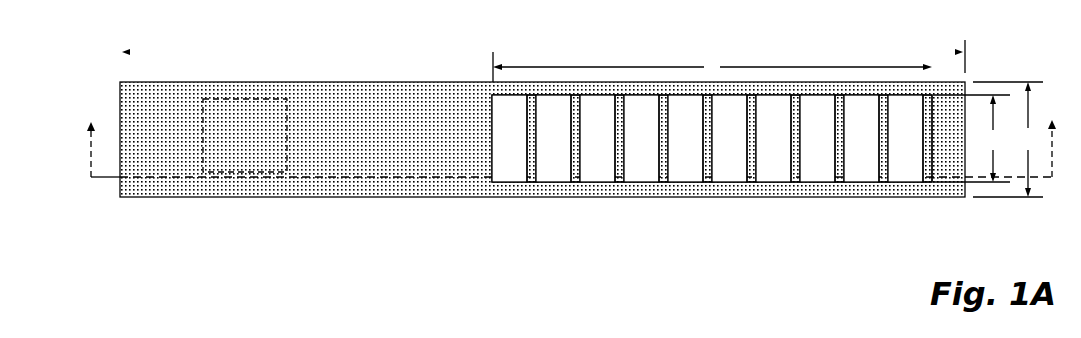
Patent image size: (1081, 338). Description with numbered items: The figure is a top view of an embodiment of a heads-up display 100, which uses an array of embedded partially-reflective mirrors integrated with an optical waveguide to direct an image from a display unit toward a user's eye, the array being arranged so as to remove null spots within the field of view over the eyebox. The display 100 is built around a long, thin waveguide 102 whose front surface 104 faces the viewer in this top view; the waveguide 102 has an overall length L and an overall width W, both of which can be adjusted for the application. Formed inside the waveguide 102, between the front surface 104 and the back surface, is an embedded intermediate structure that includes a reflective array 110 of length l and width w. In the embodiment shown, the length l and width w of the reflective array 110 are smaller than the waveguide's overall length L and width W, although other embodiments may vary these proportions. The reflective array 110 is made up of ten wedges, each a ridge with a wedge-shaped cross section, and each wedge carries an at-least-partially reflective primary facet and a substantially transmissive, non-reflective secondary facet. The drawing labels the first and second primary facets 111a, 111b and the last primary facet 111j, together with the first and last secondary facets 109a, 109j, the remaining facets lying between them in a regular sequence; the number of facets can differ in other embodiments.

The heads-up display 100 is at (80, 74).
The waveguide 102 is at (345, 204).
The front surface 104 is at (163, 186).
The reflective array 110 is at (699, 182).
The secondary facet 109a is at (520, 183).
The secondary facet 109j is at (928, 183).
The primary facet 111a is at (492, 157).
The primary facet 111b is at (549, 183).
The primary facet 111j is at (913, 183).